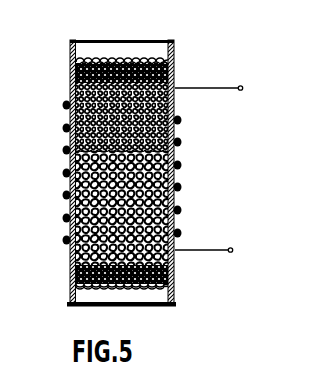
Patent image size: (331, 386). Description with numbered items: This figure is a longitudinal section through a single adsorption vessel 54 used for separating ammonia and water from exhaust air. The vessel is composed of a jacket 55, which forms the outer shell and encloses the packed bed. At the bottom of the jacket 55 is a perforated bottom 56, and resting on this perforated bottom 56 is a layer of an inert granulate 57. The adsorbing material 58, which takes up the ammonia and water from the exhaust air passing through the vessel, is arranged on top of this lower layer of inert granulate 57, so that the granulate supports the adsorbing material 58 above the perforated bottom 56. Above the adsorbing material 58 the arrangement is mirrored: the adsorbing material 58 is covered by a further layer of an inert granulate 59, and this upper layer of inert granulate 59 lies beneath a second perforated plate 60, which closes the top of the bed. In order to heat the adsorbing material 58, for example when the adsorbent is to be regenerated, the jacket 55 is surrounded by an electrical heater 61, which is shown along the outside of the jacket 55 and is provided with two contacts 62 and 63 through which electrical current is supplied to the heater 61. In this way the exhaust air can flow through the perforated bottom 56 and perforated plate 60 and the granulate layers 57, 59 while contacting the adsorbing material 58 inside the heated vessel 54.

The adsorption vessel 54 is at (182, 124).
The jacket 55 is at (176, 156).
The perforated bottom 56 is at (171, 284).
The layer of inert granulate 57 is at (172, 275).
The adsorbing material 58 is at (64, 162).
The layer of inert granulate 59 is at (175, 72).
The second perforated plate 60 is at (158, 66).
The electrical heater 61 is at (178, 188).
The contact 62 is at (242, 86).
The contact 63 is at (242, 238).